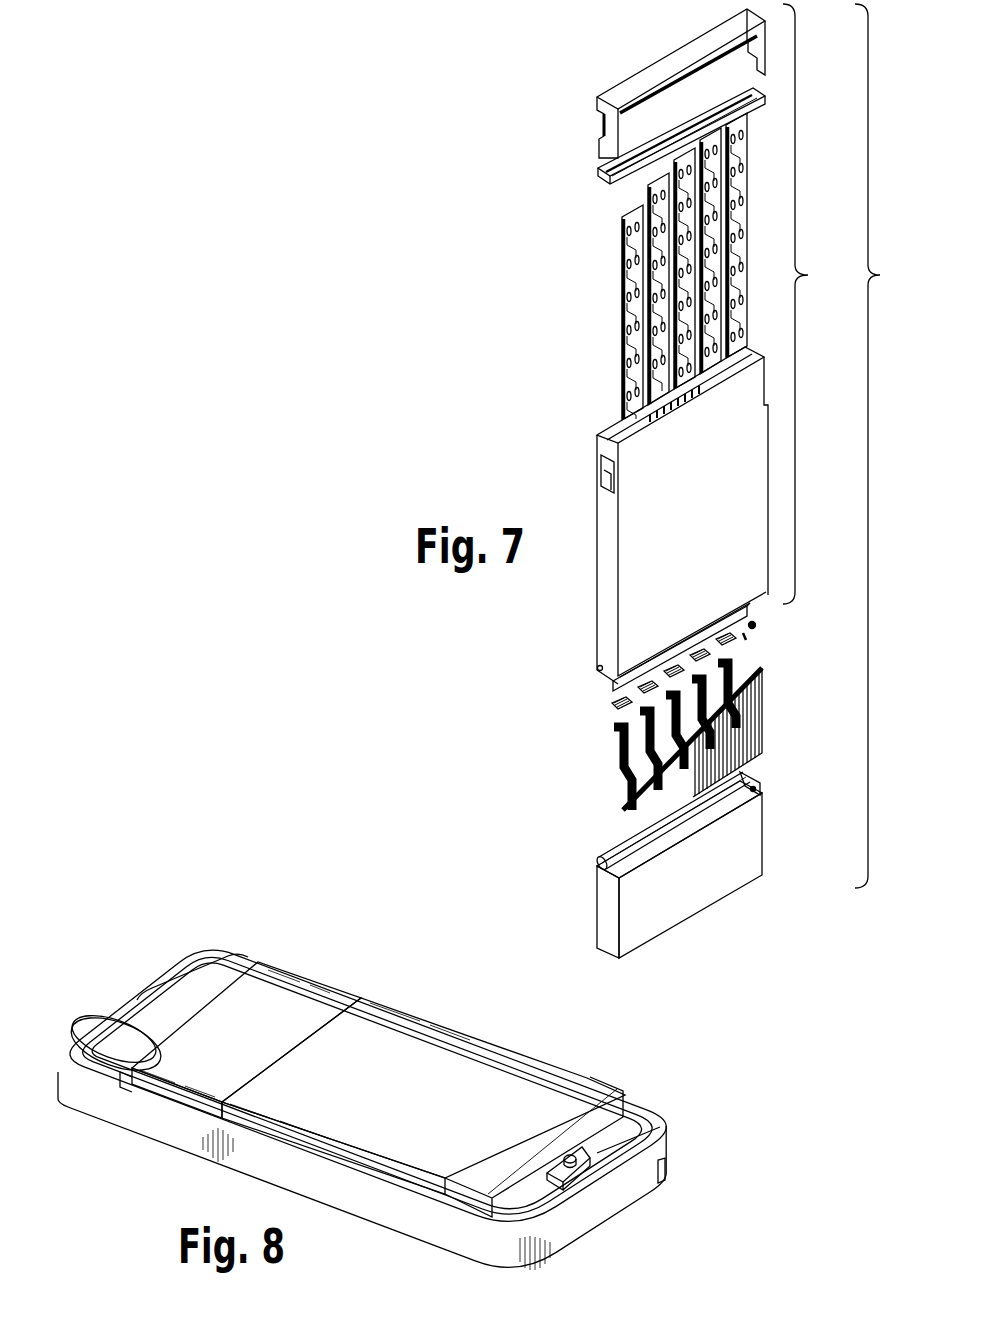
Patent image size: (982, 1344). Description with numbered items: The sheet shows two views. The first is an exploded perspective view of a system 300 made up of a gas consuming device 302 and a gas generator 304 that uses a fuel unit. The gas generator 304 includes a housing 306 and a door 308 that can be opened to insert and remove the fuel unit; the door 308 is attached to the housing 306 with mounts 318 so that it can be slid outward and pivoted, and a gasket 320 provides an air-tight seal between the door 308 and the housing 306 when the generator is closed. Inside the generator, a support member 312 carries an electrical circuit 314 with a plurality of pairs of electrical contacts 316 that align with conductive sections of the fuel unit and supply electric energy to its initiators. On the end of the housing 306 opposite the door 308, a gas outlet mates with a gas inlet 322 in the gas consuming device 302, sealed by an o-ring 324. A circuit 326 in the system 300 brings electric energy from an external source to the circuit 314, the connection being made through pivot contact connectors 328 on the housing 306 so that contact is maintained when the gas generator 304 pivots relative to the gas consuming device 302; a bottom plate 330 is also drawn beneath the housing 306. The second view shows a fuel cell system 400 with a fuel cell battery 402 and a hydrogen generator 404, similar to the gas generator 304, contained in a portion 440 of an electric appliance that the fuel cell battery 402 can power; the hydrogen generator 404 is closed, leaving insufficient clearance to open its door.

In FIG. 7, the system 300 is at (890, 446).
In FIG. 7, the gas consuming device 302 is at (679, 838).
In FIG. 7, the gas generator 304 is at (818, 304).
In FIG. 7, the housing 306 is at (651, 519).
In FIG. 7, the door 308 is at (646, 83).
In FIG. 7, the support member 312 is at (630, 266).
In FIG. 7, the electrical circuit 314 is at (623, 375).
In FIG. 7, the electrical contacts 316 is at (623, 277).
In FIG. 7, the mounts 318 is at (603, 152).
In FIG. 7, the gasket 320 is at (608, 180).
In FIG. 7, the gas inlet 322 is at (757, 787).
In FIG. 7, the o-ring 324 is at (758, 627).
In FIG. 7, the circuit 326 is at (639, 724).
In FIG. 7, the pivot contact connectors 328 is at (613, 703).
In FIG. 7, the bottom plate 330 is at (663, 652).
In FIG. 8, the fuel cell system 400 is at (115, 977).
In FIG. 8, the fuel cell battery 402 is at (288, 997).
In FIG. 8, the hydrogen generator 404 is at (452, 1060).
In FIG. 8, the portion of an electric appliance 440 is at (672, 1137).